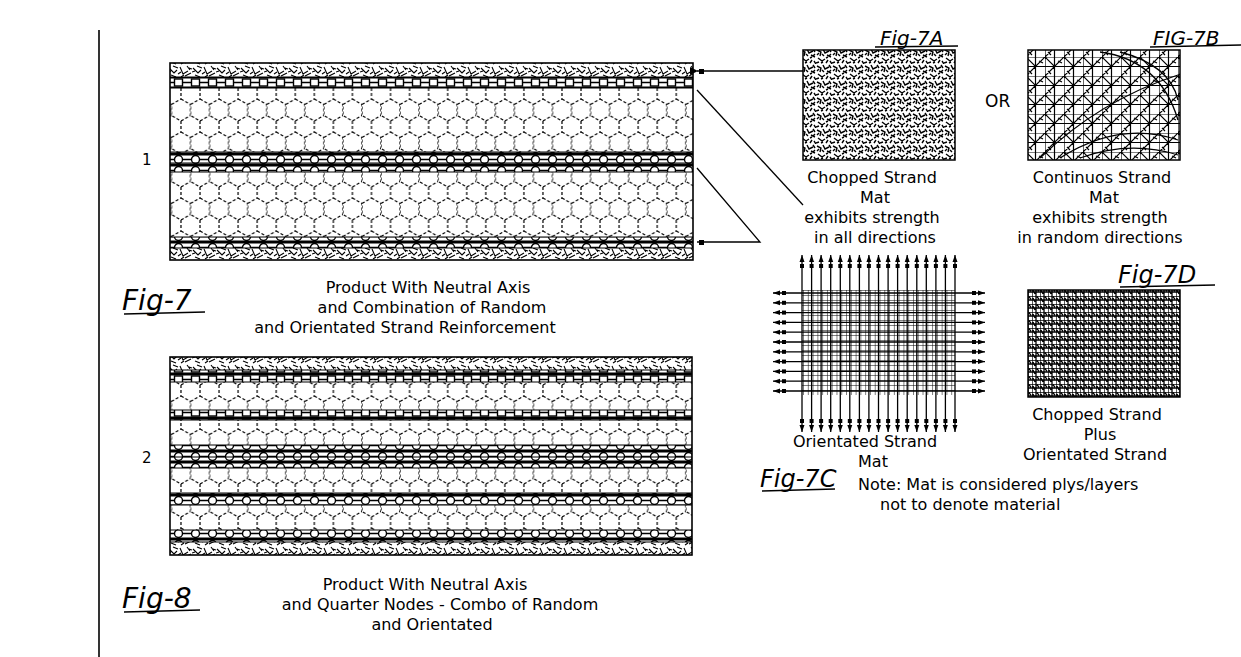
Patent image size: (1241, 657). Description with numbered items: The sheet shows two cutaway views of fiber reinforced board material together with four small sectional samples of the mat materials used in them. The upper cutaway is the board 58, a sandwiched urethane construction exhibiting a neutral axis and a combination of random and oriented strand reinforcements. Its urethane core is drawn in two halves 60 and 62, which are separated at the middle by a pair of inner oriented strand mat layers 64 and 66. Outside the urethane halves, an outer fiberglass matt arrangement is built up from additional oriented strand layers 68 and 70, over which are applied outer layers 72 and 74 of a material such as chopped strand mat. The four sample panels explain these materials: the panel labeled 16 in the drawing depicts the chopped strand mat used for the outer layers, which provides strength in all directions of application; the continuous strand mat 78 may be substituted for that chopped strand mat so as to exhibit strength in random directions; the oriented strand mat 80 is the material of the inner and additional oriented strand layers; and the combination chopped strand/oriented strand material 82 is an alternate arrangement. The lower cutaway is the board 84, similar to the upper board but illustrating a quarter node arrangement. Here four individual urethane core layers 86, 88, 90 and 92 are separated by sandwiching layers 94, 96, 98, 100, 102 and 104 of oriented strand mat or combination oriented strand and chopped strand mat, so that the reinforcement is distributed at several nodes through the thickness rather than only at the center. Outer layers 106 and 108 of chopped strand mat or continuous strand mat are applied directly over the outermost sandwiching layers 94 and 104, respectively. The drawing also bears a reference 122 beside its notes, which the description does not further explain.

In FIG. 7, the fiber reinforced board material 58 is at (145, 98).
In FIG. 7, the urethane half 60 is at (170, 128).
In FIG. 7, the urethane half 62 is at (170, 200).
In FIG. 7, the inner oriented strand mat layer 64 is at (696, 158).
In FIG. 7, the inner oriented strand mat layer 66 is at (699, 167).
In FIG. 7, the additional oriented strand layer 68 is at (699, 88).
In FIG. 7, the additional oriented strand layer 70 is at (700, 245).
In FIG. 7, the outer chopped strand mat layer 72 is at (693, 63).
In FIG. 7, the outer chopped strand mat layer 74 is at (690, 262).
In FIG. 7A, the chopped strand mat 16 is at (957, 80).
In FIG. 7B, the continuous strand mat 78 is at (1183, 104).
In FIG. 7C, the oriented strand mat 80 is at (772, 322).
In FIG. 7D, the combination chopped strand/oriented strand material 82 is at (1016, 316).
In FIG. 8, the fiber reinforced board material 84 is at (118, 416).
In FIG. 8, the urethane core layer 86 is at (170, 398).
In FIG. 8, the urethane core layer 88 is at (170, 442).
In FIG. 8, the urethane core layer 90 is at (170, 484).
In FIG. 8, the urethane core layer 92 is at (170, 520).
In FIG. 8, the sandwiching layer 94 is at (694, 378).
In FIG. 8, the sandwiching layer 96 is at (694, 418).
In FIG. 8, the sandwiching layer 98 is at (694, 452).
In FIG. 8, the sandwiching layer 100 is at (694, 466).
In FIG. 8, the sandwiching layer 102 is at (694, 500).
In FIG. 8, the sandwiching layer 104 is at (694, 538).
In FIG. 8, the outer mat layer 106 is at (692, 357).
In FIG. 8, the outer mat layer 108 is at (692, 556).
In FIG. 8, the flex modulus sketch legend 122 is at (712, 656).